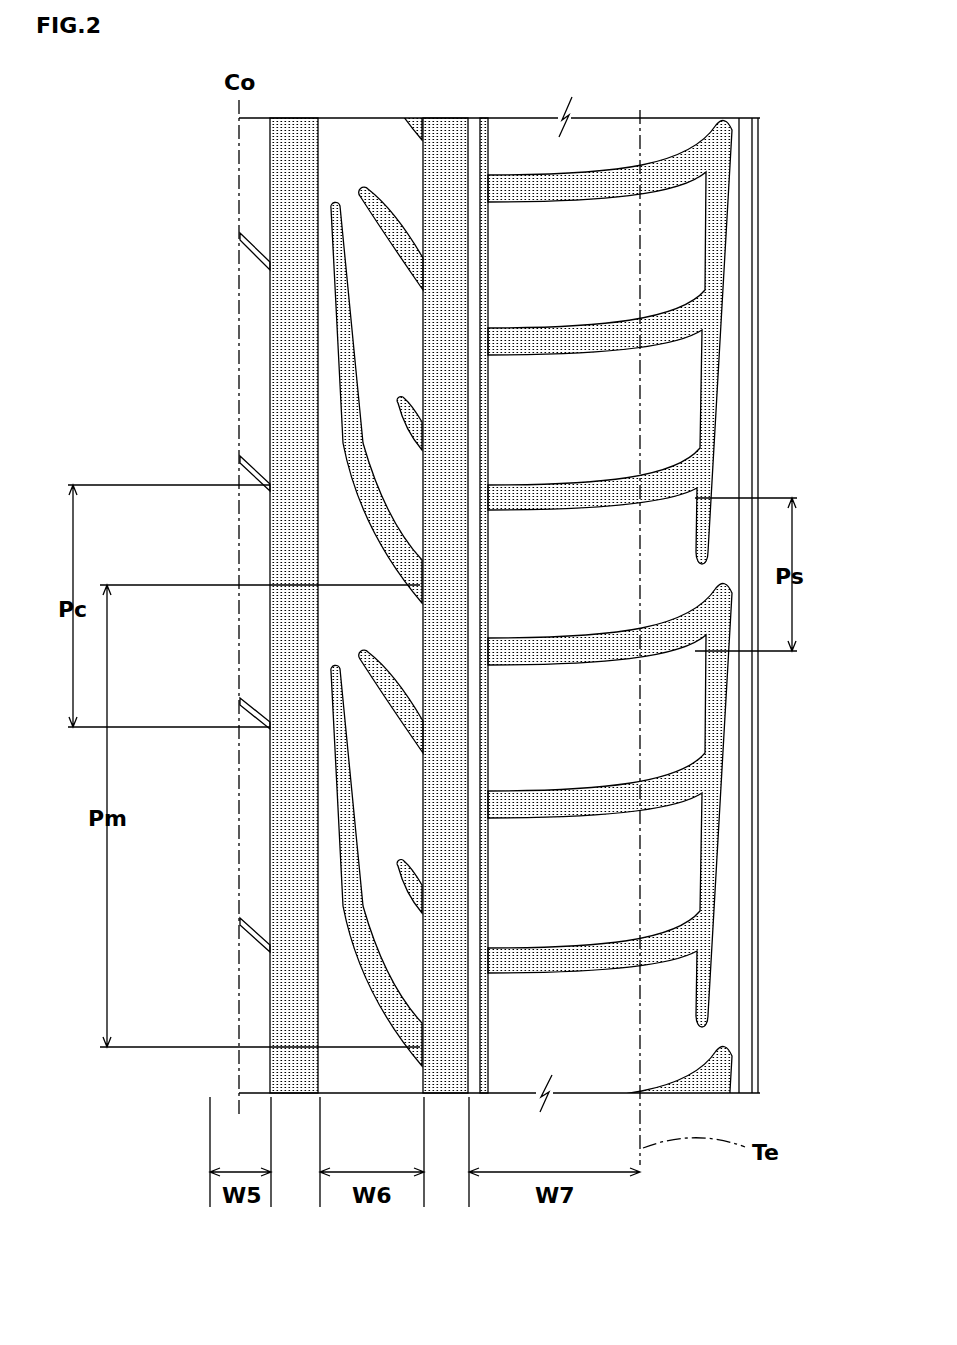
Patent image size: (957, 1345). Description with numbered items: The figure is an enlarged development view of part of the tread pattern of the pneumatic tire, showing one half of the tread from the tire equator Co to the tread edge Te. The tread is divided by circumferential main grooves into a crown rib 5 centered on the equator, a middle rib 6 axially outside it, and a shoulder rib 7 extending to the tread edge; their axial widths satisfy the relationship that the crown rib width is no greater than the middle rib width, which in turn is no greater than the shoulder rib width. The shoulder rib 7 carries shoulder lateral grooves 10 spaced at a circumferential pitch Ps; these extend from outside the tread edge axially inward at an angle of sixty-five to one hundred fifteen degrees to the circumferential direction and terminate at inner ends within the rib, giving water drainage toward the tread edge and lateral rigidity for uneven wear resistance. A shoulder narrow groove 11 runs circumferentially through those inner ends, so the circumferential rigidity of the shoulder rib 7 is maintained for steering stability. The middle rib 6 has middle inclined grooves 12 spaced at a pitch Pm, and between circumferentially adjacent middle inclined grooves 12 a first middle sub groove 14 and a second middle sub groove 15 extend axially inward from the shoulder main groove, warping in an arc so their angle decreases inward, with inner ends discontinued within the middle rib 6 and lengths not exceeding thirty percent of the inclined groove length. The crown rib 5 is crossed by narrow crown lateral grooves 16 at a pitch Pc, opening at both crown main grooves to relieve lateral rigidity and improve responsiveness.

The crown rib 5 is at (271, 1212).
The middle rib 6 is at (424, 1212).
The shoulder rib 7 is at (640, 1212).
The shoulder lateral groove 10 is at (593, 815).
The shoulder narrow groove 11 is at (488, 153).
The middle inclined groove 12 is at (336, 324).
The first middle sub groove 14 is at (368, 190).
The second middle sub groove 15 is at (400, 398).
The crown lateral groove 16 is at (260, 465).